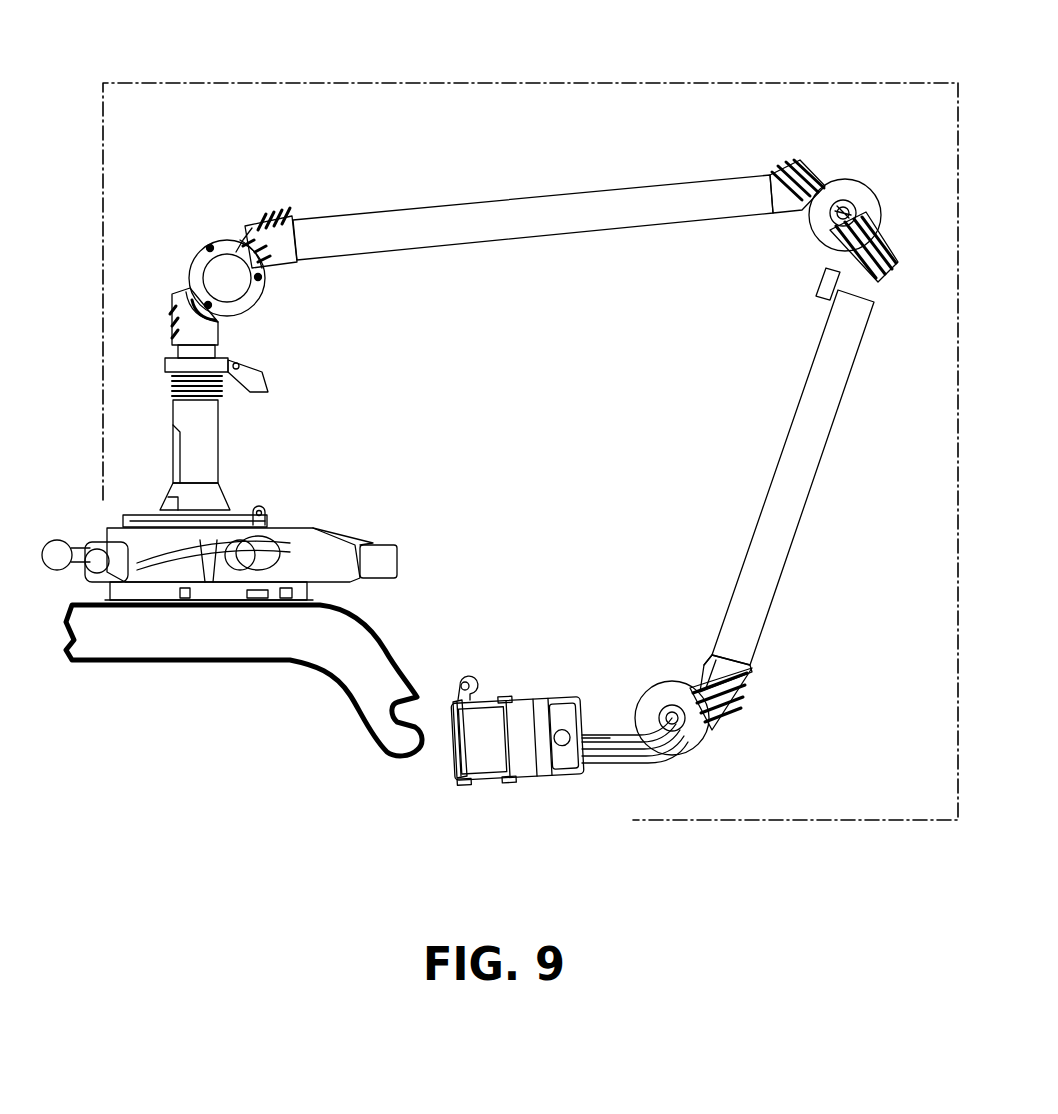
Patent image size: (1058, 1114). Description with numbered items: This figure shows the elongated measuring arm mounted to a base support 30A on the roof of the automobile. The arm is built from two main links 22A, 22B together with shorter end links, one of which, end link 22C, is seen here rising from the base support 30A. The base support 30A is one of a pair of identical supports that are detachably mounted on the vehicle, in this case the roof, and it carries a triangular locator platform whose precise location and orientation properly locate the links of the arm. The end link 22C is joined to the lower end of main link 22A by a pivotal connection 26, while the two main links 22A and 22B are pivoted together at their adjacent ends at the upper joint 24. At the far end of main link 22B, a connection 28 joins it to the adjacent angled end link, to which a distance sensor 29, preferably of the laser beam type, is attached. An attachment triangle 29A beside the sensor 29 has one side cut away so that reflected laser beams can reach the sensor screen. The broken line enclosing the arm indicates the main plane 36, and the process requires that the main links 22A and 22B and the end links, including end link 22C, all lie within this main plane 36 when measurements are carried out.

The main plane 36 is at (330, 82).
The main link 22B is at (455, 222).
The joint 24 is at (880, 188).
The main link 22A is at (763, 492).
The connection 28 is at (664, 676).
The distance sensor 29 is at (520, 705).
The attachment triangle 29A is at (453, 690).
The pivotal connection 26 is at (262, 306).
The end link 22C is at (205, 462).
The base support 30A is at (350, 530).